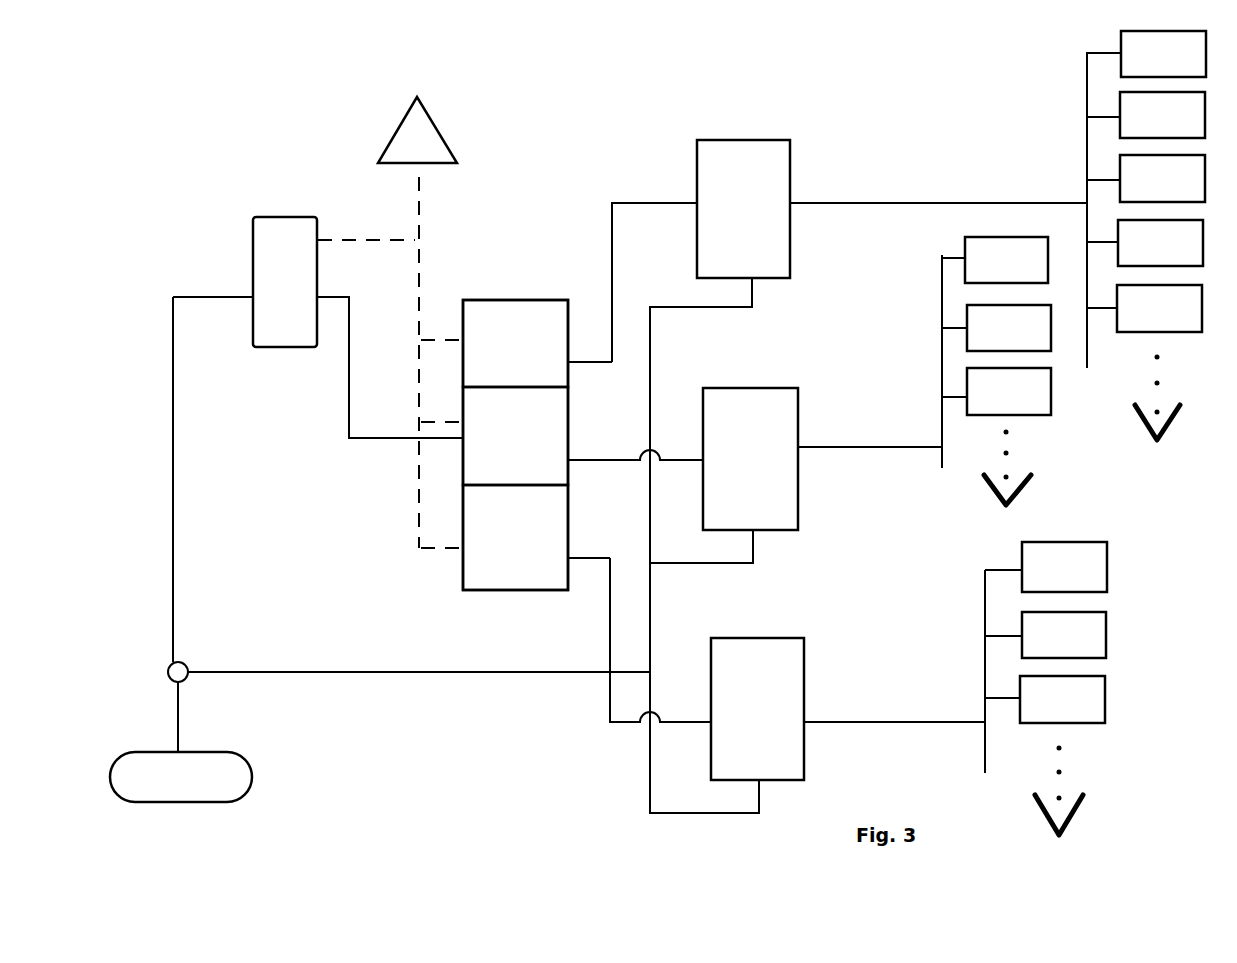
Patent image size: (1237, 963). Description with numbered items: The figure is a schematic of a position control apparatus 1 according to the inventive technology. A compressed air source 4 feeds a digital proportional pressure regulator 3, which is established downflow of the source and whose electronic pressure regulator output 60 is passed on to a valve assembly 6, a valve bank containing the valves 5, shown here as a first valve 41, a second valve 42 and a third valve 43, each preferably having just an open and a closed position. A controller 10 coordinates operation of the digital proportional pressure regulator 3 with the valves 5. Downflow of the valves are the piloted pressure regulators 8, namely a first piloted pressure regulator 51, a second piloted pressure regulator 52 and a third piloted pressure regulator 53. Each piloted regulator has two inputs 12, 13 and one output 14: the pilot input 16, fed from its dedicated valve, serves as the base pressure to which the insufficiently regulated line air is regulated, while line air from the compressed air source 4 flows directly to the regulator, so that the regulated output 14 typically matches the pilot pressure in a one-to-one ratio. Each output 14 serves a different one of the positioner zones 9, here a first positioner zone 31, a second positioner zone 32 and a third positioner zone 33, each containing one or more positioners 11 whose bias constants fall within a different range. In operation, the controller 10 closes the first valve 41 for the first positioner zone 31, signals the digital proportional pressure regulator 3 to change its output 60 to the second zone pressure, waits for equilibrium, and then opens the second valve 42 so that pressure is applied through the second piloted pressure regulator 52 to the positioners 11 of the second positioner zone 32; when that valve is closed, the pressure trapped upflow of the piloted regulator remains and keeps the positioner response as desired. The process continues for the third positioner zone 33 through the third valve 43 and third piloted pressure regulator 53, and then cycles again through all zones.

The position control apparatus 1 is at (462, 760).
The digital proportional pressure regulator 3 is at (285, 282).
The compressed air source 4 is at (181, 777).
The valves 5 is at (620, 474).
The valve assembly 6 is at (515, 430).
The piloted pressure regulators 8 is at (723, 532).
The positioner zones 9 is at (1040, 433).
The controller 10 is at (390, 322).
The positioners 11 is at (1086, 377).
The input 12 is at (665, 451).
The input 13 is at (730, 550).
The output 14 is at (938, 449).
The pilot input 16 is at (409, 512).
The first positioner zone 31 is at (1077, 143).
The second positioner zone 32 is at (931, 304).
The third positioner zone 33 is at (1128, 633).
The first valve 41 is at (515, 343).
The second valve 42 is at (515, 436).
The third valve 43 is at (515, 537).
The first piloted pressure regulator 51 is at (743, 209).
The second piloted pressure regulator 52 is at (750, 459).
The third piloted pressure regulator 53 is at (757, 709).
The electronic pressure regulator output 60 is at (390, 355).